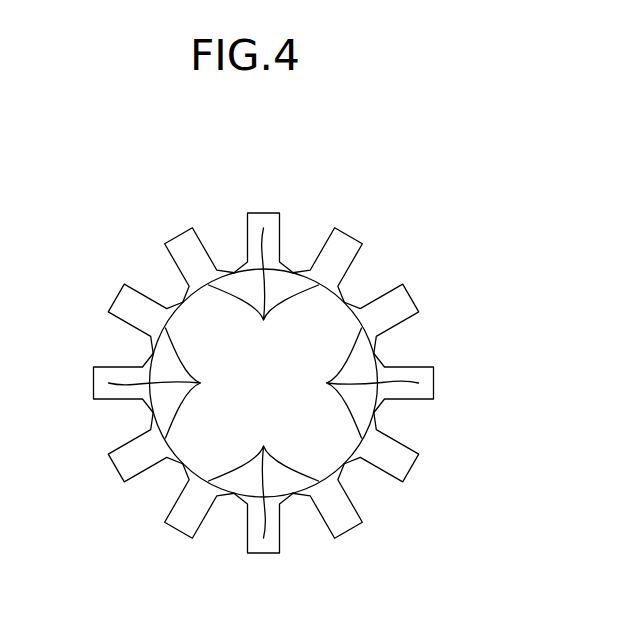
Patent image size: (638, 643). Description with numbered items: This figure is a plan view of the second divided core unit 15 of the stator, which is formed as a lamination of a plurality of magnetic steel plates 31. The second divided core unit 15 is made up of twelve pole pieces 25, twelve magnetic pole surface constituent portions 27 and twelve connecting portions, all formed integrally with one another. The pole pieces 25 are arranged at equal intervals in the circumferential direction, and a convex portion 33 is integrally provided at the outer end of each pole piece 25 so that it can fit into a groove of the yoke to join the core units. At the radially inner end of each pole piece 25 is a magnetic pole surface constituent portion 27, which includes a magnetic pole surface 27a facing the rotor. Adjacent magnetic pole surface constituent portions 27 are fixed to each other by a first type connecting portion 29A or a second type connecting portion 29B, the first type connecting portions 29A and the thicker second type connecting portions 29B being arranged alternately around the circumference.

The second divided core unit 15 is at (385, 286).
The pole piece 25 is at (259, 240).
The magnetic pole surface constituent portion 27 is at (197, 270).
The magnetic pole surface 27a is at (200, 383).
The first type connecting portion 29A is at (232, 262).
The second type connecting portion 29B is at (294, 262).
The magnetic steel plate 31 is at (403, 287).
The convex portion 33 is at (258, 212).